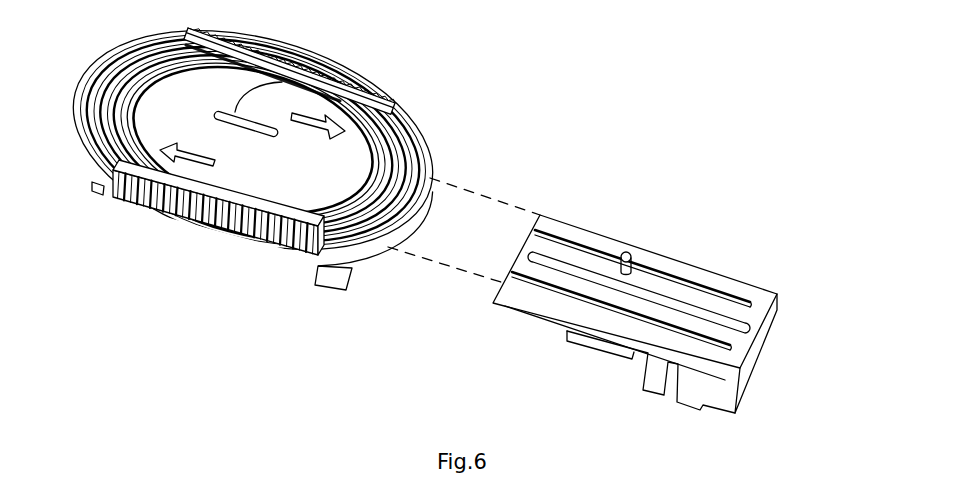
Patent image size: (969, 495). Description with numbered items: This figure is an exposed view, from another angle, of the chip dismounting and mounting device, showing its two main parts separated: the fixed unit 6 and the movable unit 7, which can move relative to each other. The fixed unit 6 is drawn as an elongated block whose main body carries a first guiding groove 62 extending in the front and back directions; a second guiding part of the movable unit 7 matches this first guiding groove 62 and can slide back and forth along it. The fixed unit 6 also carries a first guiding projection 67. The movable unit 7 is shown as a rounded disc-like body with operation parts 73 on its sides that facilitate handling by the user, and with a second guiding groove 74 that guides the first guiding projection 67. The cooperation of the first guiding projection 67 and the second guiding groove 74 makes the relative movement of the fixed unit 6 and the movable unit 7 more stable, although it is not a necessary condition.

The fixed unit 6 is at (741, 326).
The movable unit 7 is at (404, 137).
The first guiding groove 62 is at (578, 270).
The first guiding projection 67 is at (633, 258).
The operation parts 73 is at (184, 222).
The second guiding groove 74 is at (333, 77).